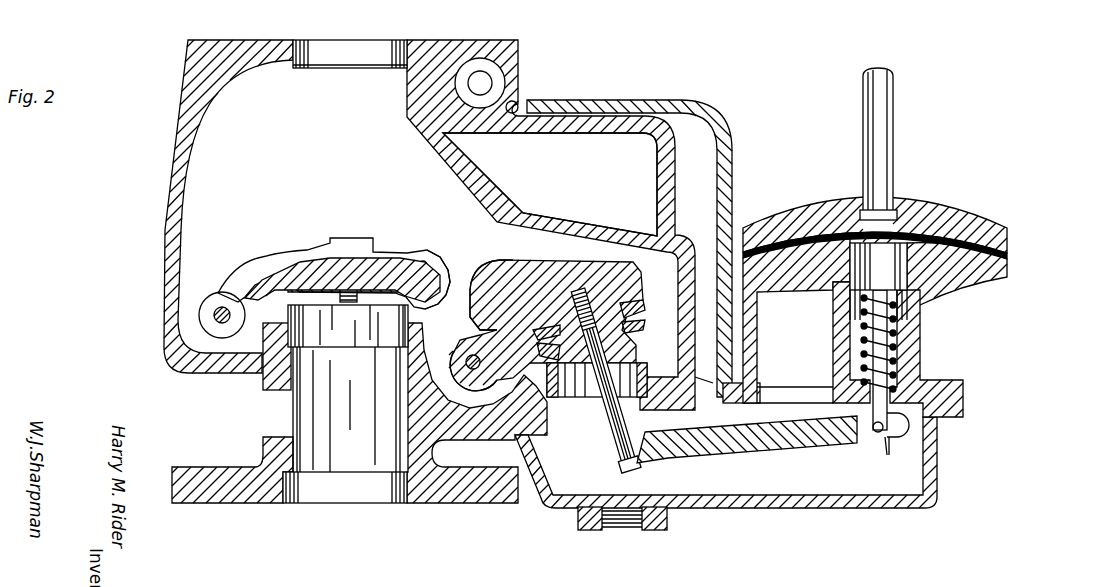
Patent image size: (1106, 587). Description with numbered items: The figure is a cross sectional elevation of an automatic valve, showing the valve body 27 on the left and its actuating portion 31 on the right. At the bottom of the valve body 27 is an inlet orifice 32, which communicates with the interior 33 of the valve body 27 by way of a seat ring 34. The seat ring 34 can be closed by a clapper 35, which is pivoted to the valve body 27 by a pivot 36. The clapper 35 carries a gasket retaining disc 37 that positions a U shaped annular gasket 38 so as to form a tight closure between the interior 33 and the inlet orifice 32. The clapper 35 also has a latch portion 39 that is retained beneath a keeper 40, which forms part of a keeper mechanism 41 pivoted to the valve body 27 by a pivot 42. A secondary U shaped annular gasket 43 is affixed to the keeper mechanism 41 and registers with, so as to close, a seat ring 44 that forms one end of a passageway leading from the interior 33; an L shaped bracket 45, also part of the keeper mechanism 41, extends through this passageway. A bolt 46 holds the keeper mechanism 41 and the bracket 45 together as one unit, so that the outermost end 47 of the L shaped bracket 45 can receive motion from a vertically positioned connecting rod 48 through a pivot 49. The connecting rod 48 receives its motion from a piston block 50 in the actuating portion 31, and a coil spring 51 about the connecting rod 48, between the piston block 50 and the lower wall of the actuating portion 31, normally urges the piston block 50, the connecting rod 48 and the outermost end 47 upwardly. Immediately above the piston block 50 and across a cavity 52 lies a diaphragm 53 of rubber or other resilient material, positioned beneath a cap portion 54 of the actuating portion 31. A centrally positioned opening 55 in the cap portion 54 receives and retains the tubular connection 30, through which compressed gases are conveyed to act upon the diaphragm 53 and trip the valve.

The valve body 27 is at (172, 203).
The tubular connection 30 is at (887, 167).
The actuating portion 31 is at (1007, 277).
The inlet orifice 32 is at (345, 500).
The interior 33 is at (471, 184).
The seat ring 34 is at (348, 388).
The clapper 35 is at (260, 260).
The pivot 36 is at (212, 325).
The gasket retaining disc 37 is at (357, 302).
The U shaped annular gasket 38 is at (426, 309).
The latch portion 39 is at (465, 282).
The keeper 40 is at (472, 287).
The keeper mechanism 41 is at (565, 268).
The pivot 42 is at (472, 370).
The secondary U shaped annular gasket 43 is at (636, 320).
The seat ring 44 is at (581, 390).
The L shaped bracket 45 is at (693, 450).
The bolt 46 is at (622, 444).
The outermost end 47 is at (887, 440).
The connecting rod 48 is at (882, 412).
The pivot 49 is at (890, 430).
The piston block 50 is at (890, 273).
The coil spring 51 is at (898, 345).
The cavity 52 is at (965, 267).
The diaphragm 53 is at (1007, 256).
The cap portion 54 is at (957, 213).
The centrally positioned opening 55 is at (897, 211).